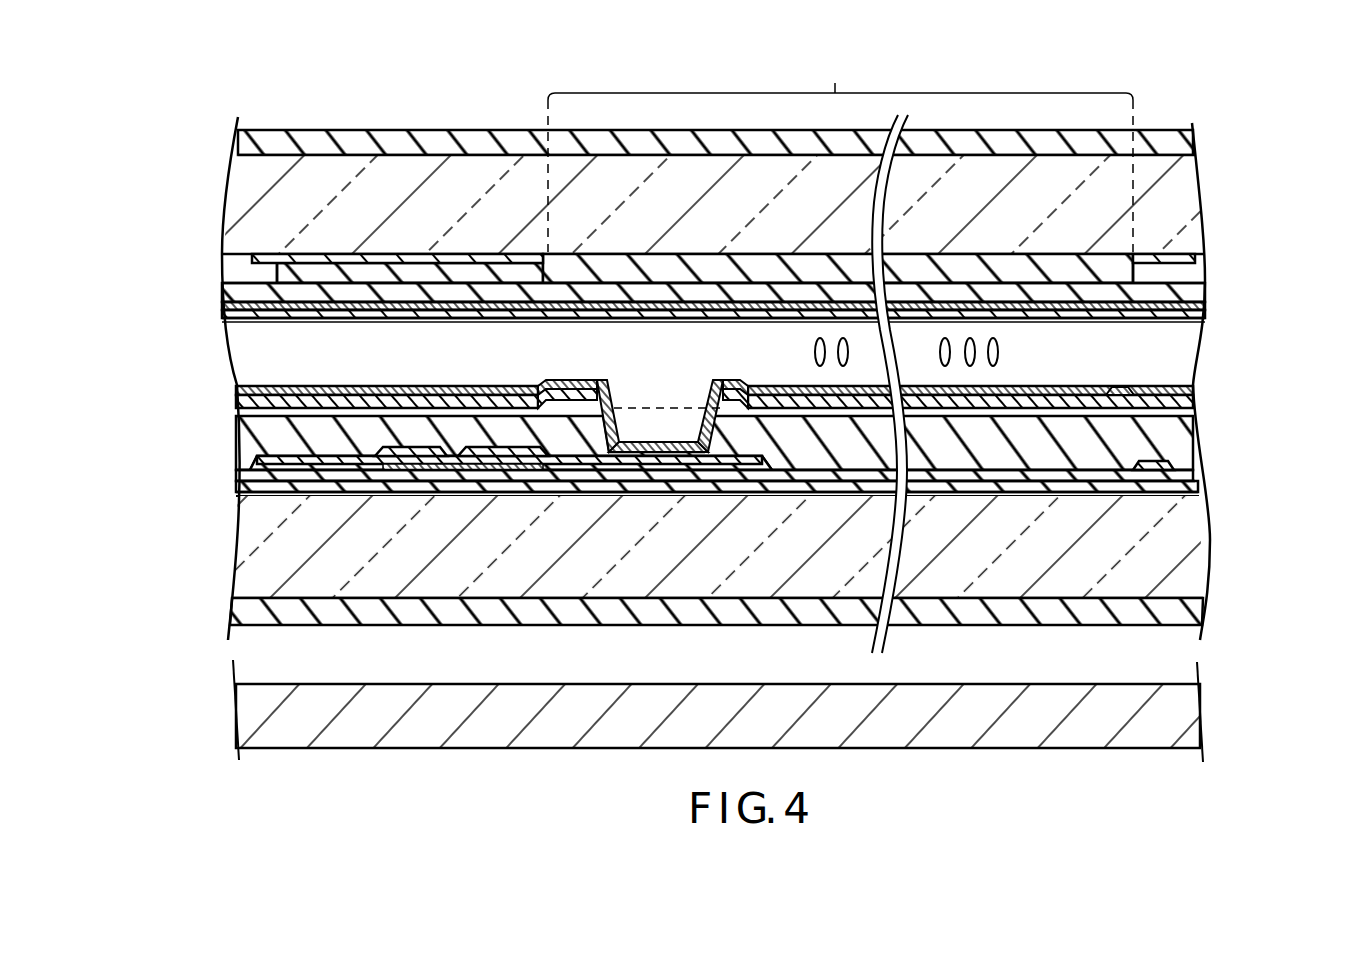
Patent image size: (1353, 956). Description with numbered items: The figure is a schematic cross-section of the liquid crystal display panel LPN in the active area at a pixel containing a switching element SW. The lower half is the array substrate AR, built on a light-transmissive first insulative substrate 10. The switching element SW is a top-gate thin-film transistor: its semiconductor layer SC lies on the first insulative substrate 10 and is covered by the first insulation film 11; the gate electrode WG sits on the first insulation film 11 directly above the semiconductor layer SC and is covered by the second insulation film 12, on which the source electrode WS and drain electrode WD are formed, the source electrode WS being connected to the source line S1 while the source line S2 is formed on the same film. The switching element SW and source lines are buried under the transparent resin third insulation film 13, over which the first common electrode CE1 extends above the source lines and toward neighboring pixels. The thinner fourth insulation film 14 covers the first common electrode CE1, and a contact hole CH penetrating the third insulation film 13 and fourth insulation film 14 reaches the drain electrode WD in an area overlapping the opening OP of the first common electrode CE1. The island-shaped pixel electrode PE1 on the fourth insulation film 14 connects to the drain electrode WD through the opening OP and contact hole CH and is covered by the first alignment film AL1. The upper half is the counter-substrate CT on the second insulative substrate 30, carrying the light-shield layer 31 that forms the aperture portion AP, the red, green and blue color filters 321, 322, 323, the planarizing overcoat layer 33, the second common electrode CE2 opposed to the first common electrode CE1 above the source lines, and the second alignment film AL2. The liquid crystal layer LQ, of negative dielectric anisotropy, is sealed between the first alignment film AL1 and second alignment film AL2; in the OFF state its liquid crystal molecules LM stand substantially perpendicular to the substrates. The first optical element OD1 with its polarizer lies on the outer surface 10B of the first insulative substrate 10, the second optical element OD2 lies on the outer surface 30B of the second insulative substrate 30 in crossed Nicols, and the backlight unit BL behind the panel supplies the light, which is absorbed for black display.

The second insulative substrate 30 is at (236, 196).
The light-shield layer 31 is at (256, 256).
The red color filter 321 is at (262, 273).
The green color filter 322 is at (1145, 300).
The blue color filter 323 is at (1190, 262).
The overcoat layer 33 is at (232, 303).
The second alignment film AL2 is at (240, 318).
The liquid crystal layer LQ is at (245, 352).
The first alignment film AL1 is at (258, 388).
The fourth insulation film 14 is at (262, 402).
The third insulation film 13 is at (262, 436).
The second insulation film 12 is at (262, 464).
The first insulation film 11 is at (262, 486).
The source line S1 is at (265, 501).
The first insulative substrate 10 is at (245, 575).
The switching element SW is at (417, 503).
The semiconductor layer SC is at (441, 497).
The gate electrode WG is at (465, 497).
The source electrode WS is at (410, 447).
The drain electrode WD is at (515, 447).
The opening OP is at (640, 405).
The contact hole CH is at (668, 412).
The pixel electrode PE1 is at (724, 387).
The liquid crystal molecules LM is at (1000, 352).
The first common electrode CE1 is at (1124, 388).
The second common electrode CE2 is at (1186, 320).
The source line S2 is at (1168, 463).
The aperture portion AP is at (840, 155).
The outer surface of the second insulative substrate 30B is at (1164, 150).
The second optical element OD2 is at (1193, 148).
The liquid crystal display panel LPN is at (1204, 195).
The counter-substrate CT is at (1192, 240).
The array substrate AR is at (1215, 543).
The first optical element OD1 is at (1204, 603).
The outer surface of the first insulative substrate 10B is at (1155, 607).
The backlight unit BL is at (1200, 736).